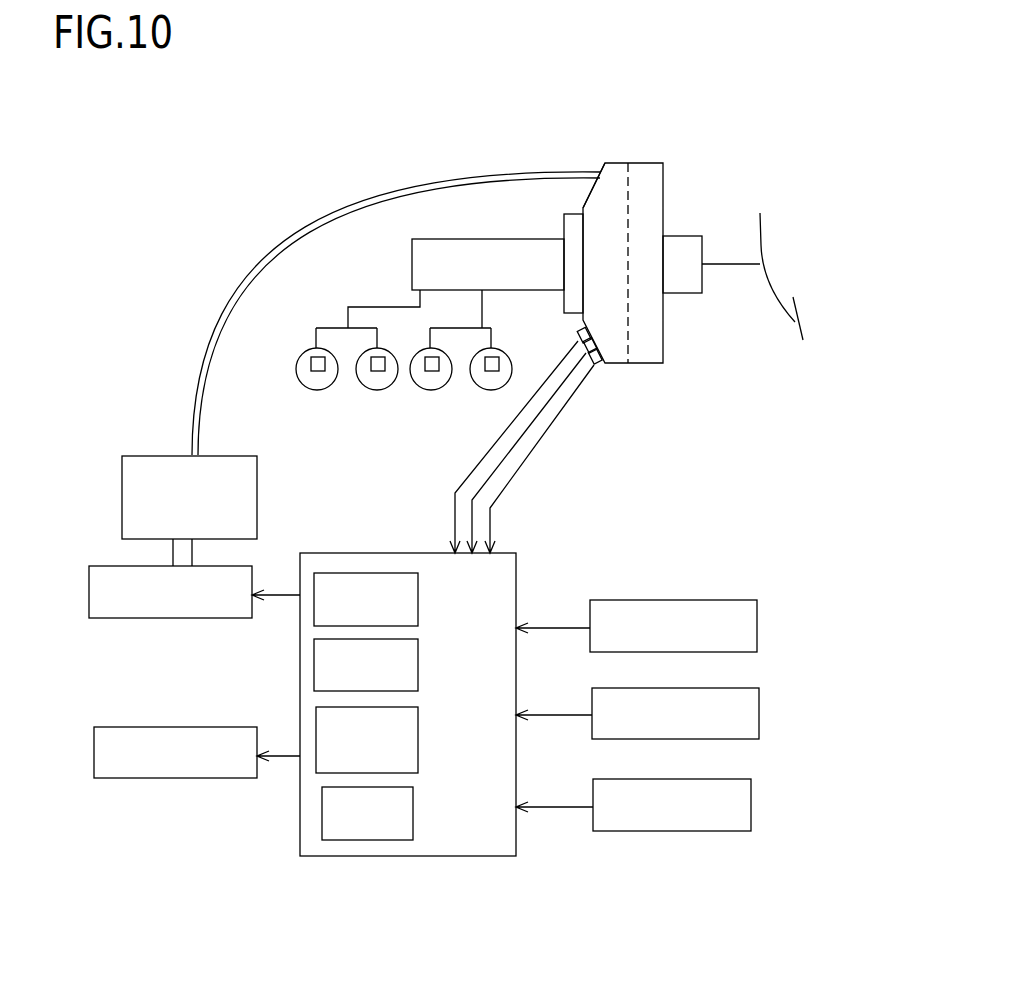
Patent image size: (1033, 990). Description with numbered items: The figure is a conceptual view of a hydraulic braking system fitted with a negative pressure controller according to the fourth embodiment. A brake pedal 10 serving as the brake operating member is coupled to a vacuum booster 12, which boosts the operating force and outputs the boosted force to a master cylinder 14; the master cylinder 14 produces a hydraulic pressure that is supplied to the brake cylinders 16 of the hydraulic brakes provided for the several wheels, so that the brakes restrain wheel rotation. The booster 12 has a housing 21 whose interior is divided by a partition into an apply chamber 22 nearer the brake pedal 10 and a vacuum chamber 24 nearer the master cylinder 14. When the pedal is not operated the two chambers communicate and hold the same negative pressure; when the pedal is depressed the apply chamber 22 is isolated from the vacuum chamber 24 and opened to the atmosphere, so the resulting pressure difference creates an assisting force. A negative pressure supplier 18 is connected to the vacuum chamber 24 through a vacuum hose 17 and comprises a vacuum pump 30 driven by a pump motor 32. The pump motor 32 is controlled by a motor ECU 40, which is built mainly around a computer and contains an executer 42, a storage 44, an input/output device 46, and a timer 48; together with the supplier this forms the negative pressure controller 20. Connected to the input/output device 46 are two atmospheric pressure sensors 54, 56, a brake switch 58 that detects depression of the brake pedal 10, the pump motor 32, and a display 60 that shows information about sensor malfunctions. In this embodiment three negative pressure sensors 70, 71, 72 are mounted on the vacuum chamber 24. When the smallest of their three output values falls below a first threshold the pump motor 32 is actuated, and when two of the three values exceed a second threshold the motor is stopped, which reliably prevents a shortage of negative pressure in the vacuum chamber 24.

The brake pedal 10 is at (800, 330).
The vacuum booster 12 is at (662, 231).
The master cylinder 14 is at (453, 248).
The brake cylinders 16 is at (318, 372).
The vacuum hose 17 is at (358, 208).
The negative pressure supplier 18 is at (186, 548).
The negative pressure controller 20 is at (406, 727).
The housing 21 is at (663, 207).
The apply chamber 22 is at (651, 175).
The vacuum chamber 24 is at (615, 180).
The vacuum pump 30 is at (250, 508).
The pump motor 32 is at (222, 607).
The motor ECU 40 is at (340, 562).
The executer 42 is at (418, 600).
The storage 44 is at (413, 652).
The input/output device 46 is at (410, 722).
The timer 48 is at (405, 798).
The atmospheric pressure sensor 54 is at (750, 617).
The atmospheric pressure sensor 56 is at (750, 705).
The brake switch 58 is at (745, 805).
The display 60 is at (228, 765).
The negative pressure sensor 70 is at (578, 330).
The negative pressure sensor 71 is at (595, 340).
The negative pressure sensor 72 is at (601, 368).